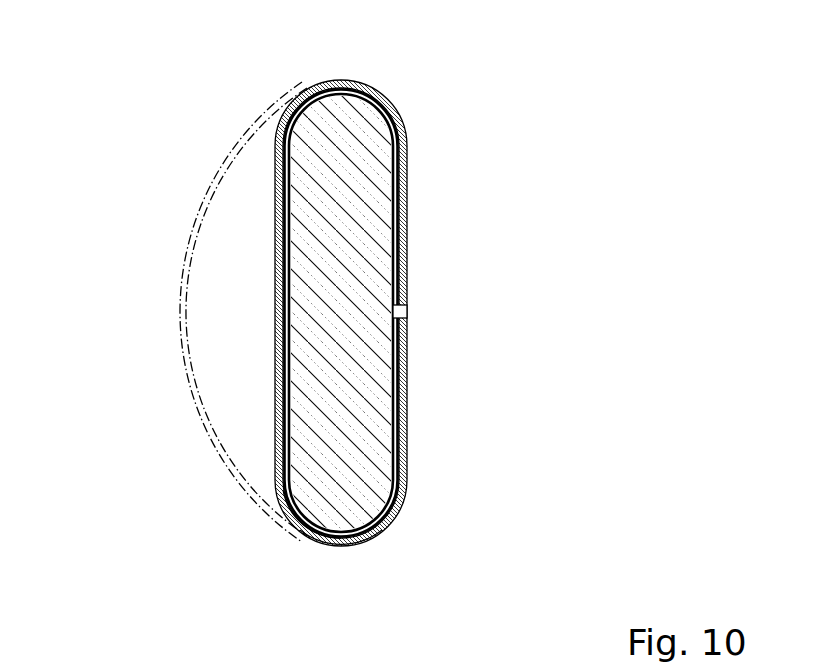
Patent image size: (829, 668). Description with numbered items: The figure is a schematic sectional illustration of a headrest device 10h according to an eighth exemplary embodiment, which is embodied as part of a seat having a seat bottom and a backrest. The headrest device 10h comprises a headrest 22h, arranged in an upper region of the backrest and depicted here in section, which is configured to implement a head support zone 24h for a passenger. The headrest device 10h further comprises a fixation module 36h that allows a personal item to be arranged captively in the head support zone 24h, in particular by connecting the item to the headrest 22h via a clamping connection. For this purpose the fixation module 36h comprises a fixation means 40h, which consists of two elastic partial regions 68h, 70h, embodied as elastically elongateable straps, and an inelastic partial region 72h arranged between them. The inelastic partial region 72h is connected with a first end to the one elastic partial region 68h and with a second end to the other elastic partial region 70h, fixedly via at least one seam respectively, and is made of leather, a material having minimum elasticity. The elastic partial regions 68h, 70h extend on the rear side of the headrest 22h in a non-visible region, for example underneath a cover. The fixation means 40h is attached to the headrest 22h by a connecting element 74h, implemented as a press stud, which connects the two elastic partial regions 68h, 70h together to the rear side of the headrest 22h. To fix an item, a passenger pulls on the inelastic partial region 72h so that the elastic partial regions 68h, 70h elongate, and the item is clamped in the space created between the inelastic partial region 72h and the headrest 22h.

The headrest device 10h is at (166, 139).
The fixation module 36h is at (233, 104).
The headrest 22h is at (350, 152).
The head support zone 24h is at (284, 280).
The elastic partial region 68h is at (405, 172).
The elastic partial region 70h is at (405, 420).
The connecting element 74h is at (408, 312).
The fixation means 40h is at (300, 540).
The inelastic partial region 72h is at (344, 547).